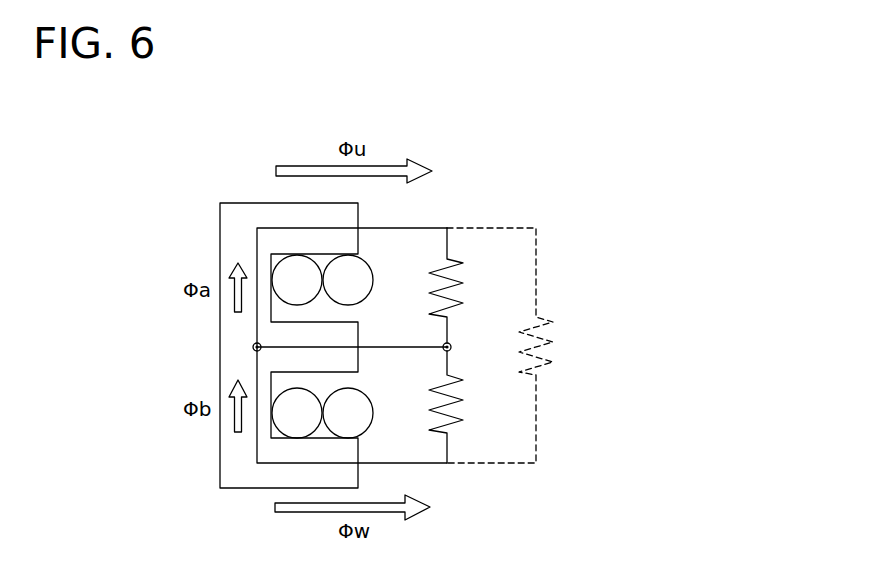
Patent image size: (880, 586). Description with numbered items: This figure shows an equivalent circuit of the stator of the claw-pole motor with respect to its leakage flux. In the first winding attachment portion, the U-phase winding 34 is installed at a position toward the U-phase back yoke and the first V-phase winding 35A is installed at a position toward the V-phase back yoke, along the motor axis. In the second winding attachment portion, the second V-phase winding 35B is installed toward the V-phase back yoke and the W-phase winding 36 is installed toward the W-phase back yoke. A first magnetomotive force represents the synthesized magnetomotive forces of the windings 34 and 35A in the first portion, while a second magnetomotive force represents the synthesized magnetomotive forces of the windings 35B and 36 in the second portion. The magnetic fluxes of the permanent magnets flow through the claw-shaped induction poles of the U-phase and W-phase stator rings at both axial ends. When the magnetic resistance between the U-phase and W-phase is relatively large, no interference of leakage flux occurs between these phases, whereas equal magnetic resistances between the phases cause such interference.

The U-phase winding 34 is at (297, 254).
The first V-phase winding 35A is at (376, 279).
The second V-phase winding 35B is at (297, 438).
The W-phase winding 36 is at (373, 413).